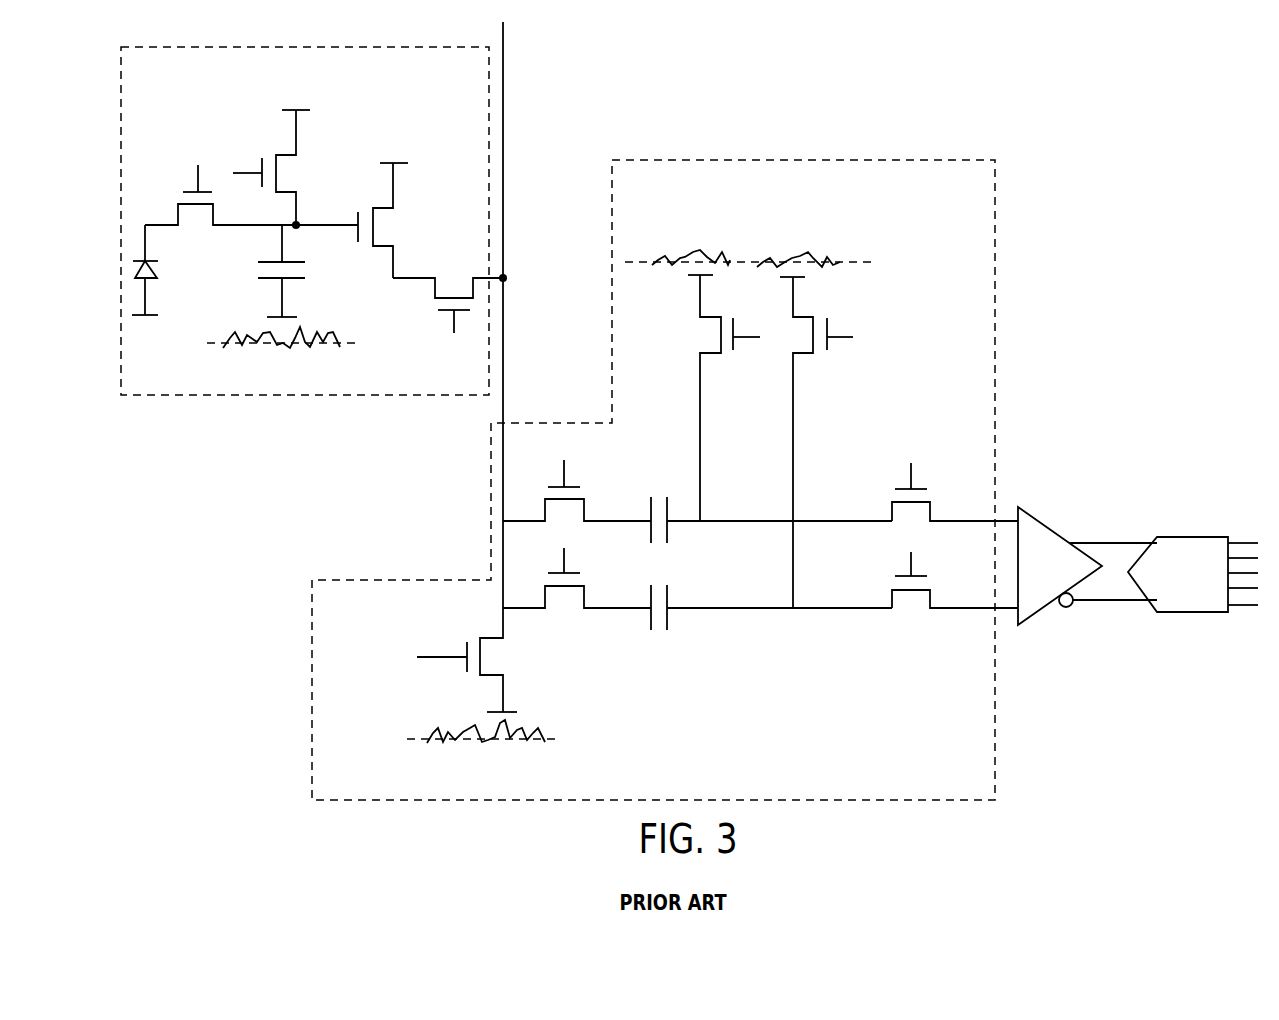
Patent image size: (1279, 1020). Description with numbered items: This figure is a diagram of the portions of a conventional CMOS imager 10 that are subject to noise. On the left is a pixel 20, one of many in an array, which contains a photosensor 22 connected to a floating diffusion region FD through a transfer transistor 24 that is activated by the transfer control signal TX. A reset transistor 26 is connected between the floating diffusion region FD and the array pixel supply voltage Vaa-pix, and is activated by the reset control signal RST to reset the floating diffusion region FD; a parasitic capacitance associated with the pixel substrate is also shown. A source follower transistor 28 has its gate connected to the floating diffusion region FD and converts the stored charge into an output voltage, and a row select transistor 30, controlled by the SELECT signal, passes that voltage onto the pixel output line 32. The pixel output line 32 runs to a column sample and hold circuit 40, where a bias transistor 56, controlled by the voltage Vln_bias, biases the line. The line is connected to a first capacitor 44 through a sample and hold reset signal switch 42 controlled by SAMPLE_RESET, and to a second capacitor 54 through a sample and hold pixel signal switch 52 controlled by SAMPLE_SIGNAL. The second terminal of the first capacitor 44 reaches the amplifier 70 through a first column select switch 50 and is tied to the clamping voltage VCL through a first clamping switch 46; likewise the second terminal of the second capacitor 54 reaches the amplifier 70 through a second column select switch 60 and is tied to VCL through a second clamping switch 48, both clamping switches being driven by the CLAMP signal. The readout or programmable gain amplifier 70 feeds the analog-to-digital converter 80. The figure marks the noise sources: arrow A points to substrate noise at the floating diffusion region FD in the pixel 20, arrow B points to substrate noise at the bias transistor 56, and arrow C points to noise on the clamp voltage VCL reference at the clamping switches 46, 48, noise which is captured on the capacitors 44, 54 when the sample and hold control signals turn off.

The CMOS imager 10 is at (768, 105).
The pixel 20 is at (268, 396).
The photosensor 22 is at (135, 278).
The transfer transistor 24 is at (178, 204).
The reset transistor 26 is at (273, 193).
The source follower transistor 28 is at (396, 209).
The row select transistor 30 is at (432, 297).
The pixel output line 32 is at (505, 110).
The column sample and hold circuit 40 is at (995, 240).
The sample and hold reset signal switch 42 is at (584, 498).
The first capacitor 44 is at (659, 496).
The first clamping switch 46 is at (712, 357).
The second clamping switch 48 is at (804, 357).
The first column select switch 50 is at (892, 502).
The sample and hold pixel signal switch 52 is at (584, 610).
The second capacitor 54 is at (658, 632).
The bias transistor 56 is at (505, 676).
The second column select switch 60 is at (892, 612).
The programmable gain amplifier 70 is at (1040, 611).
The analog-to-digital converter 80 is at (1172, 613).
The arrow A is at (320, 388).
The arrow B is at (587, 743).
The arrow C is at (772, 218).
The floating diffusion region FD is at (298, 228).